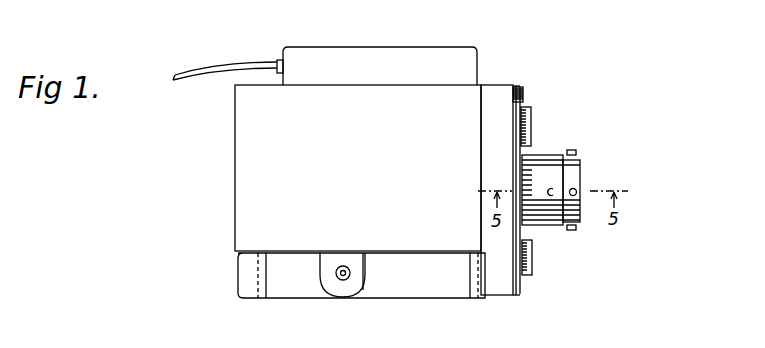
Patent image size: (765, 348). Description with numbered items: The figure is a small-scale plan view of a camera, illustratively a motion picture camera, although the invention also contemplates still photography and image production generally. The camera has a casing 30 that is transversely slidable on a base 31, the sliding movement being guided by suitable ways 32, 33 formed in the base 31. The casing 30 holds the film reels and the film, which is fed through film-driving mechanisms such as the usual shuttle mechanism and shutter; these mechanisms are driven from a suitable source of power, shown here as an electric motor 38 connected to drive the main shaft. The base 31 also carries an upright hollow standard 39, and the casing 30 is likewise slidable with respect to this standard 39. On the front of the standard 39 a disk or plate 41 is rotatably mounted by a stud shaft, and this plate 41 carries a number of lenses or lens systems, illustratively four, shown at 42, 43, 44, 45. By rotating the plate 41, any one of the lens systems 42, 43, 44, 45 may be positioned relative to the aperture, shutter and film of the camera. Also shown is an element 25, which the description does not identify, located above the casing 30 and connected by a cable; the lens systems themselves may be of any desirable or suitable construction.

The top module with cable 25 is at (403, 58).
The casing 30 is at (358, 168).
The base 31 is at (430, 290).
The way 32 is at (265, 294).
The way 33 is at (471, 295).
The electric motor 38 is at (332, 280).
The upright hollow standard 39 is at (492, 95).
The disk or plate 41 is at (523, 97).
The lens system 42 is at (558, 149).
The lens system 43 is at (530, 121).
The lens system 44 is at (530, 183).
The lens system 45 is at (529, 259).